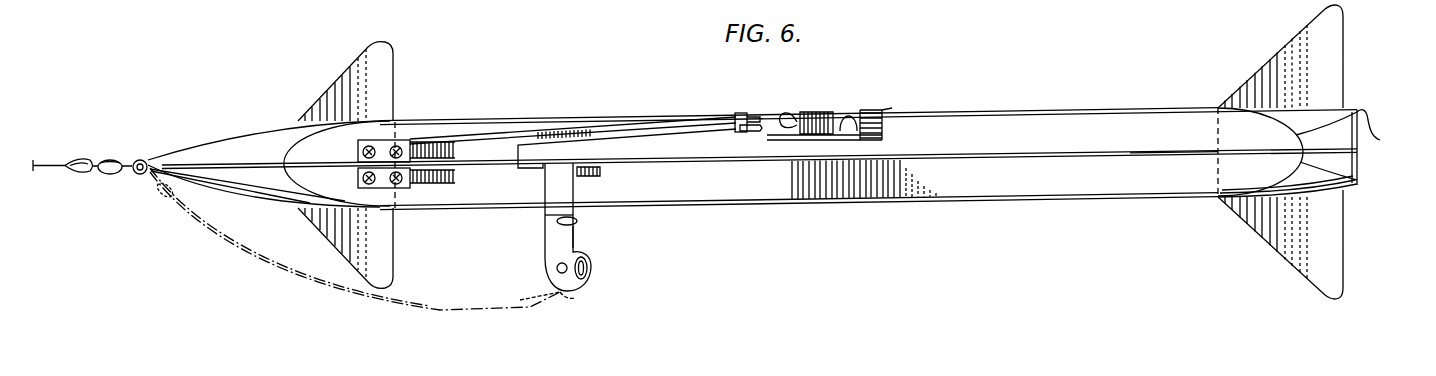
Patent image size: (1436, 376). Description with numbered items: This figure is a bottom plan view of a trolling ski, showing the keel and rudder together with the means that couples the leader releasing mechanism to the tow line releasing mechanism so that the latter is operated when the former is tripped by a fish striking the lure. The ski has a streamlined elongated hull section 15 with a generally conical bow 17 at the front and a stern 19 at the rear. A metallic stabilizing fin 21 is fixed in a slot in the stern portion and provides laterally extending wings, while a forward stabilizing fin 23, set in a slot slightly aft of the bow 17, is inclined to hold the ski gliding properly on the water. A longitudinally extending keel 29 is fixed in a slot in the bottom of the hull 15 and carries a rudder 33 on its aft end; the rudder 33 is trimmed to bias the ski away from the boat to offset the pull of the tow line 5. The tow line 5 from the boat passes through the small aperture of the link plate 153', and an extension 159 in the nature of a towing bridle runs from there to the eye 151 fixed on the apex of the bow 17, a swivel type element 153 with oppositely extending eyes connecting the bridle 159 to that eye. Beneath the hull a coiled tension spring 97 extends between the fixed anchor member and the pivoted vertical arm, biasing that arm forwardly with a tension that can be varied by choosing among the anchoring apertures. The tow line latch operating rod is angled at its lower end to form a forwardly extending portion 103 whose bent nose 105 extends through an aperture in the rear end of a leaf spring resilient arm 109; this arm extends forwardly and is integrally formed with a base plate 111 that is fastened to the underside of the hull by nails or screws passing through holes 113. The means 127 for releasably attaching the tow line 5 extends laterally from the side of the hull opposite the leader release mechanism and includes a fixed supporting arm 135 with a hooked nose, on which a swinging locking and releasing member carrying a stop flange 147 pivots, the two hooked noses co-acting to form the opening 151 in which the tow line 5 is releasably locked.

The tow line 5 is at (497, 297).
The hull section 15 is at (1082, 123).
The bow 17 is at (228, 130).
The stern 19 is at (1278, 140).
The stabilizing fin 21 is at (1327, 75).
The forward stabilizing fin 23 is at (380, 85).
The keel 29 is at (1185, 152).
The rudder 33 is at (1382, 131).
The coiled tension spring 97 is at (820, 110).
The forwardly extending portion 103 is at (747, 135).
The nose 105 is at (737, 113).
The leaf spring resilient arm 109 is at (706, 87).
The base plate 111 is at (412, 126).
The holes 113 is at (397, 186).
The means for releasably attaching the tow line 127 is at (615, 240).
The supporting arm 135 is at (560, 242).
The stop flange 147 is at (577, 223).
The eye 151 is at (143, 157).
The swivel type element 153 is at (121, 136).
The link plate 153' is at (598, 305).
The extension 159 is at (60, 163).